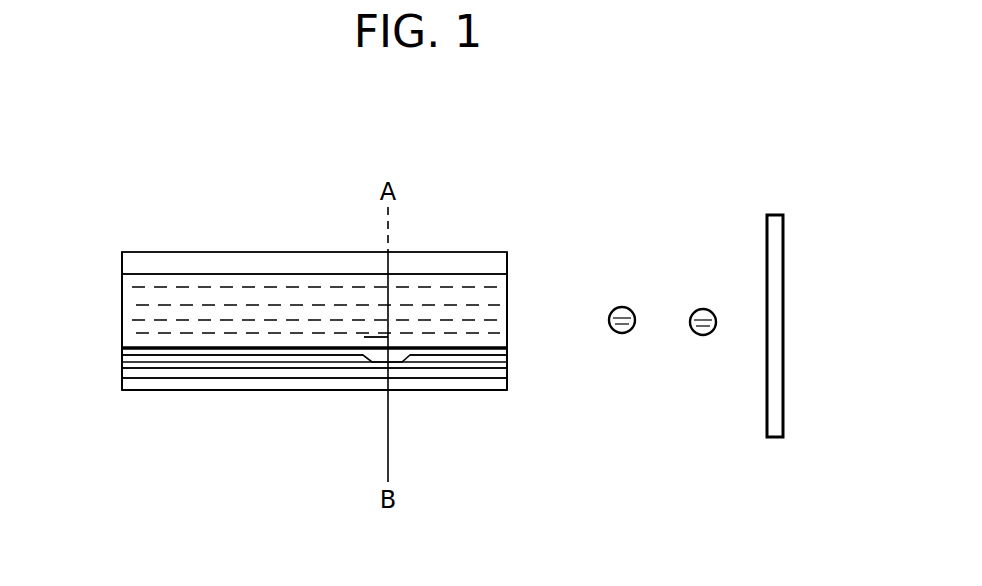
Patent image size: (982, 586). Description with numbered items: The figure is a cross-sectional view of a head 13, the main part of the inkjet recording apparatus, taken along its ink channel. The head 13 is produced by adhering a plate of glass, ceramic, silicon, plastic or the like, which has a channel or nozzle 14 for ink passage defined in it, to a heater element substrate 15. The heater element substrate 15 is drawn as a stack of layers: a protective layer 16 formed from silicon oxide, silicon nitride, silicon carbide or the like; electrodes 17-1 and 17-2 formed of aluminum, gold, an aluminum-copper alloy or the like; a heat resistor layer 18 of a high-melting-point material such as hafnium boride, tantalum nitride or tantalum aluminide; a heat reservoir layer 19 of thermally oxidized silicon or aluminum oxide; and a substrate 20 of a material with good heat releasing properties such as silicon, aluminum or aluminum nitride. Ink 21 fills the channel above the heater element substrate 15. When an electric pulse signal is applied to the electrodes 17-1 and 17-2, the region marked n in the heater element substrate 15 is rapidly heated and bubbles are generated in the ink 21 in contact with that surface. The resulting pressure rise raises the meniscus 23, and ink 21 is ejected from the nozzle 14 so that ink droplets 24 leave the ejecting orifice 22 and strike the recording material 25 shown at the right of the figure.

The head 13 is at (232, 252).
The channel (nozzle) 14 is at (318, 275).
The heater element substrate 15 is at (98, 347).
The protective layer 16 is at (158, 348).
The electrode 17-1 is at (207, 355).
The electrode 17-2 is at (482, 355).
The heat resistor layer 18 is at (268, 368).
The heat reservoir layer 19 is at (305, 378).
The substrate 20 is at (427, 390).
The ink 21 is at (151, 283).
The ejecting orifice 22 is at (515, 342).
The meniscus 23 is at (510, 318).
The ink droplets 24 is at (713, 290).
The recording material 25 is at (762, 245).